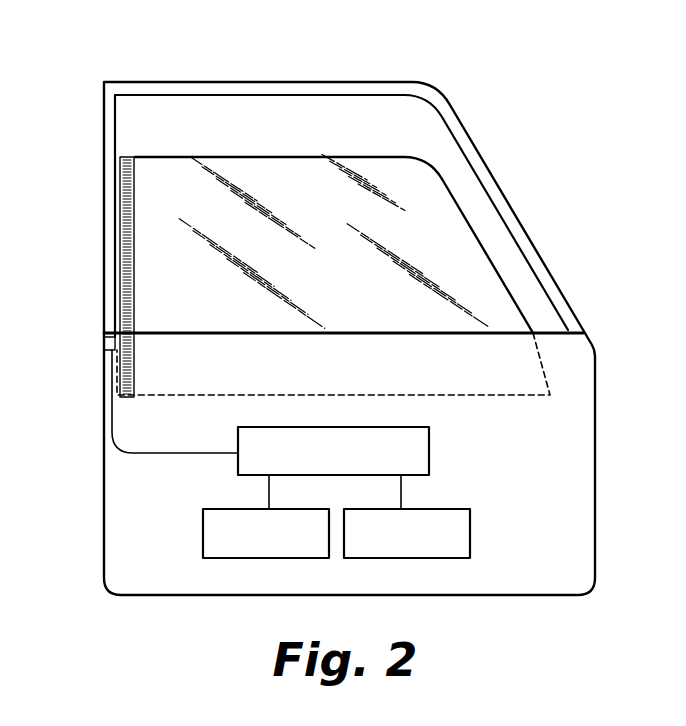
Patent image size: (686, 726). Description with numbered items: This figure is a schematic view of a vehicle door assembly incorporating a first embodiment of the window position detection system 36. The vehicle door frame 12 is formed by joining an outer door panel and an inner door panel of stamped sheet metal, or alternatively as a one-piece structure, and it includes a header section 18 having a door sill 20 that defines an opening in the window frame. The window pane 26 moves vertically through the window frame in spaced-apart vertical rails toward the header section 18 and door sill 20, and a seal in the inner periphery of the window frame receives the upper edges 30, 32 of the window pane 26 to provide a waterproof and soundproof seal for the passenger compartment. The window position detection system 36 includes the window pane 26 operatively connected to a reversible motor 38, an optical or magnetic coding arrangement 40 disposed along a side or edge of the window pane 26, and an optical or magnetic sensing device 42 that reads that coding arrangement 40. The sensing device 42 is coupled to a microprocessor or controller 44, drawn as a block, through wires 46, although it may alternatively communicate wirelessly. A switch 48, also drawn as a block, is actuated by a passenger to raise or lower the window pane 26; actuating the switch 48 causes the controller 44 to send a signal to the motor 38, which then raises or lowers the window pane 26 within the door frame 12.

The vehicle door frame 12 is at (602, 513).
The header section 18 is at (189, 82).
The door sill 20 is at (415, 91).
The window pane 26 is at (527, 365).
The upper edge of window pane 30 is at (262, 157).
The upper edge of window pane 32 is at (445, 183).
The window position detection system 36 is at (552, 132).
The reversible motor 38 is at (202, 537).
The optical or magnetic coding arrangement 40 is at (117, 156).
The optical or magnetic sensing device 42 is at (103, 342).
The controller 44 is at (432, 452).
The wires 46 is at (155, 453).
The switch 48 is at (471, 534).